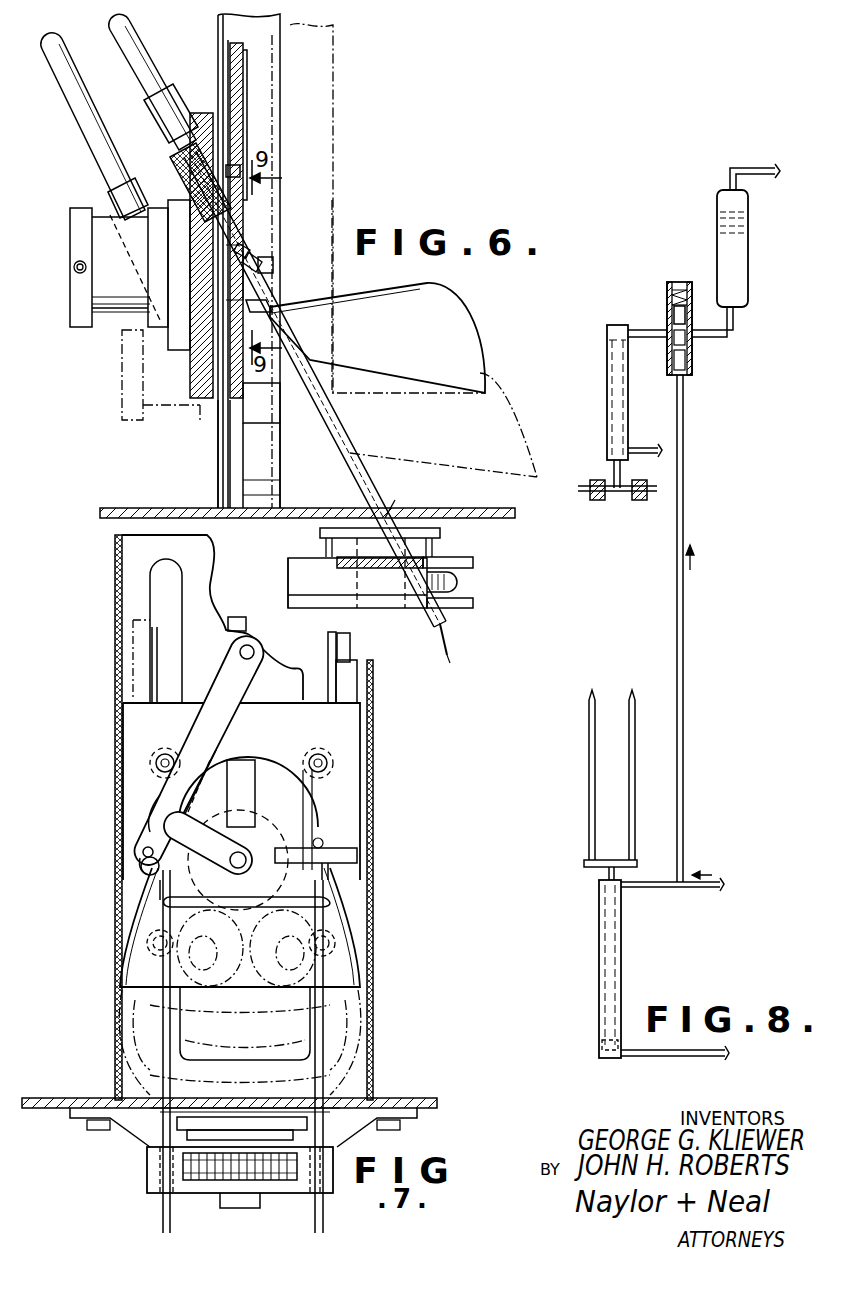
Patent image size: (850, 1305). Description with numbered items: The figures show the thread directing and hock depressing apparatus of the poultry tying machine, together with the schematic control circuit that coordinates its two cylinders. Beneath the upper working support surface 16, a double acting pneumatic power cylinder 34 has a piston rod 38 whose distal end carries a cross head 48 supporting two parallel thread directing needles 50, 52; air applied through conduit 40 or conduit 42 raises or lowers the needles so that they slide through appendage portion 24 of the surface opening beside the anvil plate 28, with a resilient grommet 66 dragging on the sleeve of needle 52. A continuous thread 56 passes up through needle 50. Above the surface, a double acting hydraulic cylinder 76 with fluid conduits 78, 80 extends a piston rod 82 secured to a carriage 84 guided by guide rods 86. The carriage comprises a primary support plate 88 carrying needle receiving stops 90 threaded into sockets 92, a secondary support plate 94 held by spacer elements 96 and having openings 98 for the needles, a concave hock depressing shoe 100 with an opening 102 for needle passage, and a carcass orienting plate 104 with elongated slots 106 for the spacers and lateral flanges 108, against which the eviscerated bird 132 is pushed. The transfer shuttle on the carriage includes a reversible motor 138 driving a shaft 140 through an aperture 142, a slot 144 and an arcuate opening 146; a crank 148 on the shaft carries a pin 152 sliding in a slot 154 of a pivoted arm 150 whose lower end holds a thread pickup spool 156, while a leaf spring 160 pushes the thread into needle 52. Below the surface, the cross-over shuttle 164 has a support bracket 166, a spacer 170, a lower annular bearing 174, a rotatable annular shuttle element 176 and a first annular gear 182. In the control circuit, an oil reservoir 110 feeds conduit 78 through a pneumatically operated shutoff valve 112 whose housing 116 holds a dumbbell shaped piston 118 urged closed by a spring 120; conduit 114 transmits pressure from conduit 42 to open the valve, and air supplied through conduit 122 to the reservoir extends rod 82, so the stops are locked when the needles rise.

In FIG. 6, the upper working support surface 16 is at (428, 518).
In FIG. 7, the upper working support surface 16 is at (415, 1098).
In FIG. 6, the appendage portion 24 is at (400, 496).
In FIG. 7, the appendage portion 24 is at (176, 1098).
In FIG. 7, the anvil plate 28 is at (238, 1100).
In FIG. 8, the pneumatic power cylinder 34 is at (624, 972).
In FIG. 8, the piston rod 38 is at (609, 880).
In FIG. 8, the conduit 40 is at (692, 1064).
In FIG. 8, the conduit 42 is at (705, 900).
In FIG. 8, the cross head 48 is at (584, 866).
In FIG. 6, the thread directing needle 50 is at (330, 443).
In FIG. 7, the thread directing needle 50 is at (163, 1218).
In FIG. 8, the thread directing needle 50 is at (589, 778).
In FIG. 7, the thread directing needle 52 is at (325, 1228).
In FIG. 8, the thread directing needle 52 is at (632, 698).
In FIG. 6, the thread 56 is at (450, 650).
In FIG. 7, the resilient grommet 66 is at (348, 1095).
In FIG. 8, the double acting hydraulic cylinder 76 is at (607, 382).
In FIG. 8, the fluid conduit 78 is at (651, 338).
In FIG. 8, the fluid conduit 80 is at (645, 447).
In FIG. 6, the piston rod 82 is at (132, 50).
In FIG. 7, the piston rod 82 is at (243, 624).
In FIG. 8, the piston rod 82 is at (613, 478).
In FIG. 6, the carriage 84 is at (203, 110).
In FIG. 8, the carriage 84 is at (590, 488).
In FIG. 6, the guide rod 86 is at (75, 120).
In FIG. 7, the guide rod 86 is at (156, 627).
In FIG. 6, the primary support plate 88 is at (195, 405).
In FIG. 6, the needle receiving stop 90 is at (178, 168).
In FIG. 8, the needle receiving stop 90 is at (600, 500).
In FIG. 6, the socket 92 is at (168, 150).
In FIG. 6, the secondary support plate 94 is at (243, 55).
In FIG. 7, the secondary support plate 94 is at (360, 720).
In FIG. 6, the spacer element 96 is at (238, 165).
In FIG. 7, the spacer element 96 is at (167, 748).
In FIG. 6, the opening 98 is at (250, 248).
In FIG. 7, the opening 98 is at (160, 878).
In FIG. 6, the hock depressing shoe 100 is at (318, 300).
In FIG. 7, the hock depressing shoe 100 is at (340, 935).
In FIG. 6, the opening 102 is at (268, 298).
In FIG. 7, the opening 102 is at (335, 910).
In FIG. 6, the carcass orienting plate 104 is at (218, 490).
In FIG. 7, the carcass orienting plate 104 is at (115, 686).
In FIG. 7, the elongated slot 106 is at (155, 583).
In FIG. 6, the lateral flange 108 is at (268, 493).
In FIG. 7, the lateral flange 108 is at (115, 772).
In FIG. 8, the oil reservoir 110 is at (748, 236).
In FIG. 8, the pneumatically operated shutoff valve 112 is at (684, 280).
In FIG. 8, the conduit 114 is at (690, 620).
In FIG. 8, the housing 116 is at (692, 282).
In FIG. 8, the dumbbell shaped piston 118 is at (672, 314).
In FIG. 8, the spring 120 is at (667, 290).
In FIG. 8, the conduit 122 is at (755, 168).
In FIG. 7, the eviscerated bird 132 is at (365, 990).
In FIG. 6, the pneumatically driven reversible motor 138 is at (88, 327).
In FIG. 7, the pneumatically driven reversible motor 138 is at (272, 840).
In FIG. 6, the shaft 140 is at (228, 262).
In FIG. 7, the shaft 140 is at (238, 868).
In FIG. 6, the aperture 142 is at (170, 270).
In FIG. 7, the slot 144 is at (255, 790).
In FIG. 7, the arcuate opening 146 is at (260, 768).
In FIG. 7, the crank 148 is at (205, 838).
In FIG. 6, the arm 150 is at (250, 85).
In FIG. 7, the arm 150 is at (226, 702).
In FIG. 7, the pin 152 is at (156, 800).
In FIG. 7, the slot 154 is at (200, 770).
In FIG. 6, the thread pickup spool 156 is at (258, 262).
In FIG. 7, the thread pickup spool 156 is at (140, 868).
In FIG. 6, the leaf spring 160 is at (273, 266).
In FIG. 7, the leaf spring 160 is at (360, 852).
In FIG. 6, the cross-over shuttle 164 is at (466, 626).
In FIG. 7, the cross-over shuttle 164 is at (140, 1158).
In FIG. 6, the support bracket 166 is at (352, 562).
In FIG. 6, the spacer 170 is at (296, 592).
In FIG. 6, the lower annular bearing 174 is at (475, 604).
In FIG. 6, the annular shuttle element 176 is at (445, 536).
In FIG. 6, the first annular gear 182 is at (450, 582).